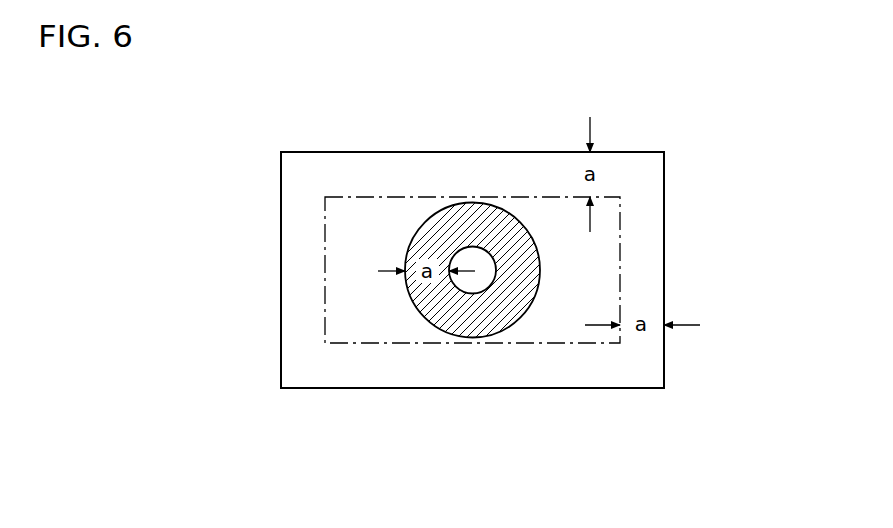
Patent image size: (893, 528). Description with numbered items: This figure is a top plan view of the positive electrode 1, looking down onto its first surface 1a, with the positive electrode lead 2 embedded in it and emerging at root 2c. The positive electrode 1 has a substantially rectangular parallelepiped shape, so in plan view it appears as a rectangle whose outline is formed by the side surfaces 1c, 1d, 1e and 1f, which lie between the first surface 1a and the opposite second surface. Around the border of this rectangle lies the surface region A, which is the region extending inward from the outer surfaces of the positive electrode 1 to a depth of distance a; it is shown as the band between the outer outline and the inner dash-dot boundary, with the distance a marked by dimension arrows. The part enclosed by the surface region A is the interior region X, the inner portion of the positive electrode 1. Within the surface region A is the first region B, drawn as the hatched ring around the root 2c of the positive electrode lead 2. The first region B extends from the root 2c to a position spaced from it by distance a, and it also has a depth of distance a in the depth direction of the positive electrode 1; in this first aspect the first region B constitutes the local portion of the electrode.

The positive electrode 1 is at (648, 152).
The first surface 1a is at (386, 242).
The side surface 1c is at (667, 262).
The side surface 1d is at (281, 271).
The side surface 1e is at (488, 388).
The side surface 1f is at (522, 152).
The positive electrode lead 2 is at (473, 262).
The root of positive electrode lead 2c is at (498, 262).
The surface region A is at (653, 212).
The first region B is at (437, 325).
The interior region X is at (355, 316).